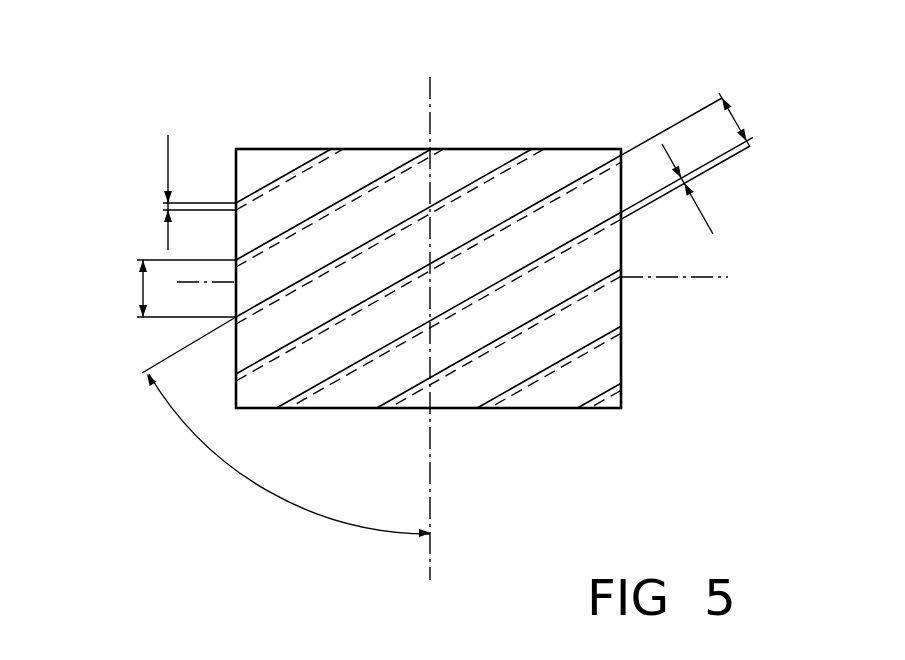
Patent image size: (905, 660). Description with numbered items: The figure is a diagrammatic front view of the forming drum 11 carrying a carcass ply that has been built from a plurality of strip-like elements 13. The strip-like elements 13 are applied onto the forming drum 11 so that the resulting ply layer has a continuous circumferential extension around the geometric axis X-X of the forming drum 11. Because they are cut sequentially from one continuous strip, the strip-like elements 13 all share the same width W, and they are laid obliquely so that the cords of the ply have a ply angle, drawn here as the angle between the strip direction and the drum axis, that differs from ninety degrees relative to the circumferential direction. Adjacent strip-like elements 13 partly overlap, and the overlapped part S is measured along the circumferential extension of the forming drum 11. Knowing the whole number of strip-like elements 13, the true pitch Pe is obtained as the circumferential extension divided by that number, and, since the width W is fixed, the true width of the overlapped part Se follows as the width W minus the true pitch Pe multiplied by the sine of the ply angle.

The forming drum 11 is at (628, 364).
The strip-like elements 13 is at (472, 162).
The width of the overlapped part S is at (167, 158).
The true pitch Pe is at (143, 290).
The width of the strip-like elements W is at (733, 120).
The true width of the overlapped part Se is at (707, 212).
The geometric axis X-X is at (712, 277).